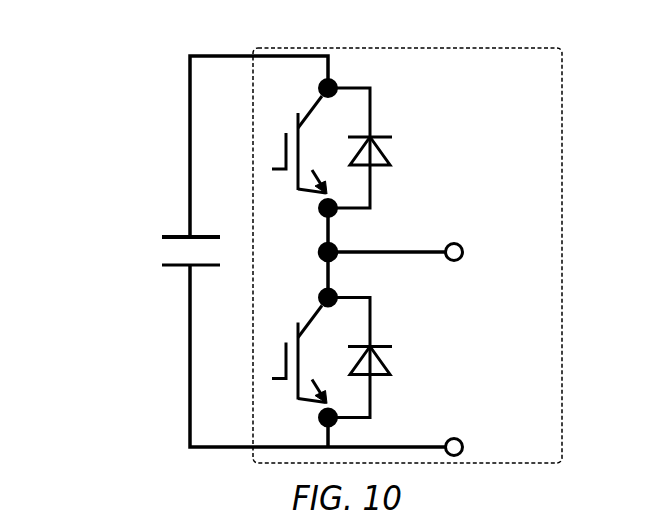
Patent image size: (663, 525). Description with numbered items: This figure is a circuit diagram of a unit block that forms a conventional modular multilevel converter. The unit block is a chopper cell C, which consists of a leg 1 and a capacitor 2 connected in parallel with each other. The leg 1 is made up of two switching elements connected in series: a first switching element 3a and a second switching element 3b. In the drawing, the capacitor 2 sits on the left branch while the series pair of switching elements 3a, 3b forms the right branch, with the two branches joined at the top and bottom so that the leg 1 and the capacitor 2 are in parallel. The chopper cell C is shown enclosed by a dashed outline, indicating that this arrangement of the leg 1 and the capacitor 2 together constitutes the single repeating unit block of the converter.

The leg 1 is at (562, 175).
The chopper cell C is at (439, 237).
The capacitor 2 is at (180, 235).
The switching element 3a is at (409, 148).
The switching element 3b is at (410, 357).